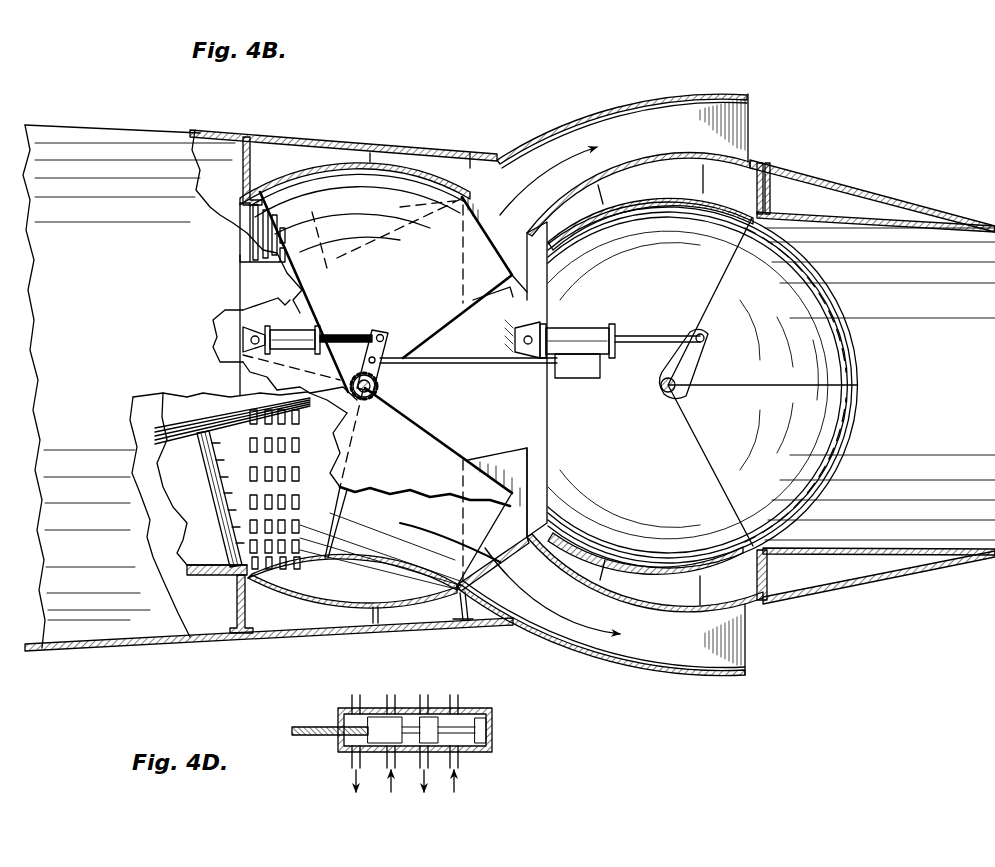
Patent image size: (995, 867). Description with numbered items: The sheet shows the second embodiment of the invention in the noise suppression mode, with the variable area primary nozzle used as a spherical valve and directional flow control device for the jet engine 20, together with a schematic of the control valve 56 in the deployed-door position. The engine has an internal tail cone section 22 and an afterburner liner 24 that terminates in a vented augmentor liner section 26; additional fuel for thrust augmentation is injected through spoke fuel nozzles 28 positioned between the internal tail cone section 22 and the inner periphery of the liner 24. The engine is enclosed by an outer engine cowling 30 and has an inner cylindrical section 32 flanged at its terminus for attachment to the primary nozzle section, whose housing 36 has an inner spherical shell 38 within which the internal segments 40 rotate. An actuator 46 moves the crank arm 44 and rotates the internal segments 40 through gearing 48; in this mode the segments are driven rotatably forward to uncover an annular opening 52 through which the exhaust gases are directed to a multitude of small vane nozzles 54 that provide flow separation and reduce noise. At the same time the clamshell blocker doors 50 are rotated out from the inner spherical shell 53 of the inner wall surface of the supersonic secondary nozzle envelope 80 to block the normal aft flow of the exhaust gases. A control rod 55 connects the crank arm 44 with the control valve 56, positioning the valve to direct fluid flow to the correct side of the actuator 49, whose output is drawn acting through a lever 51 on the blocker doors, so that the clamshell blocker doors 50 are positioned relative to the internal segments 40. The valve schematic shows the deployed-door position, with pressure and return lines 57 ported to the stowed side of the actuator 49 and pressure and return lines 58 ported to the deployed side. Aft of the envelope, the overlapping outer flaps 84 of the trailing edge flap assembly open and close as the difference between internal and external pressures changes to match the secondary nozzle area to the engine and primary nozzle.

In FIG. 4B, the jet engine 20 is at (15, 273).
In FIG. 4B, the internal tail cone section 22 is at (200, 421).
In FIG. 4B, the liner 24 is at (202, 563).
In FIG. 4B, the vented augmentor liner section 26 is at (248, 225).
In FIG. 4B, the spoke fuel nozzles 28 is at (210, 477).
In FIG. 4B, the outer engine cowling 30 is at (150, 314).
In FIG. 4B, the inner cylindrical section 32 is at (240, 197).
In FIG. 4B, the housing 36 is at (385, 140).
In FIG. 4B, the inner spherical shell 38 is at (312, 188).
In FIG. 4B, the internal segments 40 is at (448, 277).
In FIG. 4B, the crank arm 44 is at (345, 376).
In FIG. 4B, the actuator 46 is at (287, 337).
In FIG. 4B, the gearing 48 is at (370, 395).
In FIG. 4B, the actuator 49 is at (570, 326).
In FIG. 4B, the clamshell blocker doors 50 is at (860, 352).
In FIG. 4B, the lever 51 is at (704, 352).
In FIG. 4B, the annular opening 52 is at (487, 310).
In FIG. 4B, the inner spherical shell 53 is at (578, 225).
In FIG. 4B, the small vane nozzles 54 is at (668, 90).
In FIG. 4B, the control rod 55 is at (392, 358).
In FIG. 4D, the control rod 55 is at (320, 738).
In FIG. 4B, the control valve 56 is at (575, 378).
In FIG. 4D, the pressure and return lines 57 is at (376, 714).
In FIG. 4D, the pressure and return lines 58 is at (438, 706).
In FIG. 4B, the supersonic secondary nozzle envelope 80 is at (762, 608).
In FIG. 4B, the outer flaps 84 is at (912, 574).